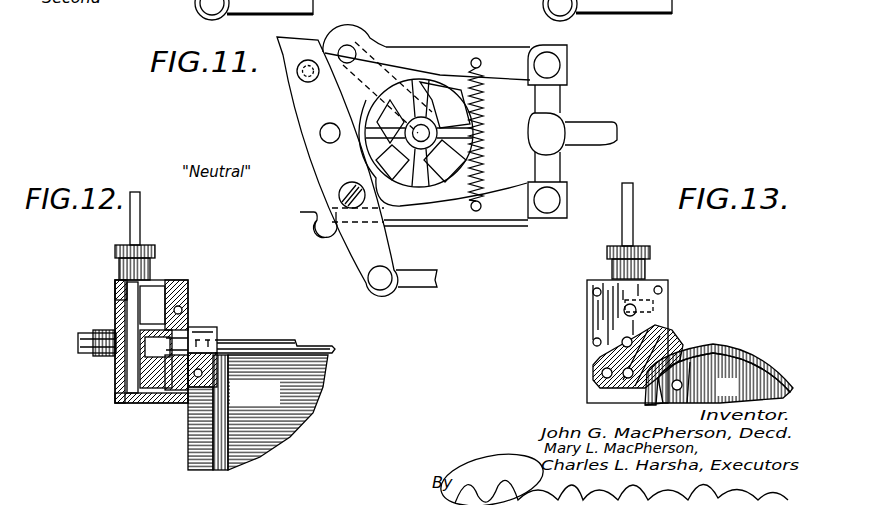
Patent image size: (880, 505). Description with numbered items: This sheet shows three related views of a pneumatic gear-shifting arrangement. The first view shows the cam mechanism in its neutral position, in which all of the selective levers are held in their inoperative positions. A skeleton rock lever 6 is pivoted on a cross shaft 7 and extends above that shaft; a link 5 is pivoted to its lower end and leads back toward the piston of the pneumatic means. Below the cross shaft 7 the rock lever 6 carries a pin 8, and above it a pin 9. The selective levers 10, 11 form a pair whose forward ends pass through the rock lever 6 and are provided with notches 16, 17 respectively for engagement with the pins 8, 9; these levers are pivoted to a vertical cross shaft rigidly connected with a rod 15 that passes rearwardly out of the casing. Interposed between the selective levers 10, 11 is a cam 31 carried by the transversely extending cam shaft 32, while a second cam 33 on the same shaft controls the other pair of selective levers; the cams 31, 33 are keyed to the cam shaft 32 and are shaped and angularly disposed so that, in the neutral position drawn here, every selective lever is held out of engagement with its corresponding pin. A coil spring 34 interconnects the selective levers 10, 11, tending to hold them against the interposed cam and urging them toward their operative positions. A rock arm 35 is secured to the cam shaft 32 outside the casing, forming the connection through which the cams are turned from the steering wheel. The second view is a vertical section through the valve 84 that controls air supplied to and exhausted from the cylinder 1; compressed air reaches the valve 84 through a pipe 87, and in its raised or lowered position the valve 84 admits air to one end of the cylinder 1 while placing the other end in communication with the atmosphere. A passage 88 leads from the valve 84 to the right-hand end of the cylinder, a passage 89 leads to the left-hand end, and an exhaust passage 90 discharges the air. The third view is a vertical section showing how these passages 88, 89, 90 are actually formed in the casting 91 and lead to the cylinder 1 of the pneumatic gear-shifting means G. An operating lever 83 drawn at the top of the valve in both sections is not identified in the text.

In FIG. 12, the cylinder 1 is at (300, 393).
In FIG. 13, the cylinder 1 is at (767, 354).
In FIG. 11, the link 5 is at (438, 277).
In FIG. 11, the rock lever 6 is at (337, 166).
In FIG. 11, the cross shaft 7 is at (320, 133).
In FIG. 11, the pin 8 is at (339, 195).
In FIG. 11, the pin 9 is at (297, 72).
In FIG. 11, the selective lever 10 is at (459, 213).
In FIG. 11, the selective lever 11 is at (441, 56).
In FIG. 11, the rod 15 is at (593, 127).
In FIG. 11, the notch 16 is at (300, 212).
In FIG. 11, the notch 17 is at (354, 48).
In FIG. 11, the cam 31 is at (397, 177).
In FIG. 11, the cam shaft 32 is at (443, 161).
In FIG. 11, the cam 33 is at (419, 133).
In FIG. 11, the coil spring 34 is at (481, 73).
In FIG. 11, the rock arm 35 is at (402, 42).
In FIG. 12, the operating lever 83 is at (140, 226).
In FIG. 13, the operating lever 83 is at (633, 230).
In FIG. 12, the valve 84 is at (127, 378).
In FIG. 12, the pipe 87 is at (82, 343).
In FIG. 13, the pipe 87 is at (653, 405).
In FIG. 12, the passage 88 is at (296, 343).
In FIG. 13, the passage 88 is at (667, 330).
In FIG. 12, the passage 89 is at (184, 310).
In FIG. 13, the passage 89 is at (655, 305).
In FIG. 12, the exhaust passage 90 is at (194, 326).
In FIG. 13, the exhaust passage 90 is at (622, 343).
In FIG. 12, the casting 91 is at (217, 336).
In FIG. 13, the casting 91 is at (681, 349).